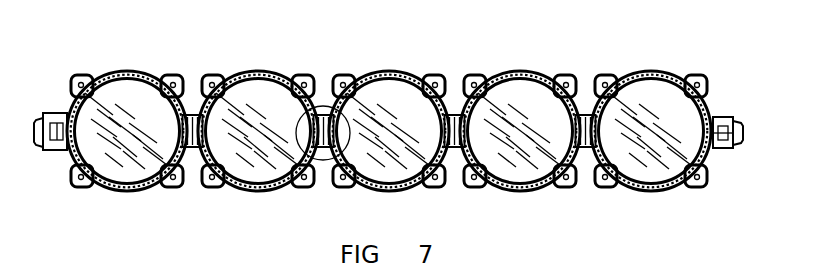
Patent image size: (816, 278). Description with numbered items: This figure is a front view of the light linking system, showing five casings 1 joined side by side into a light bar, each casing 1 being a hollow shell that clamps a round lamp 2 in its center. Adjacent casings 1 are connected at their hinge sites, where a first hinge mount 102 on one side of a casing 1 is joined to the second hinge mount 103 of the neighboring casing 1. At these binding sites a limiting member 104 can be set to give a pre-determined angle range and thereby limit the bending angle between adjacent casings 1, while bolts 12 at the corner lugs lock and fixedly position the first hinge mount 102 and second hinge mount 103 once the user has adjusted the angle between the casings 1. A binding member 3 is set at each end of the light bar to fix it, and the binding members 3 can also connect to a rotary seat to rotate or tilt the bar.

The casing 1 is at (389, 97).
The lamp 2 is at (388, 87).
The binding member 3 is at (388, 90).
The bolt 12 is at (389, 128).
The first hinge mount 102 is at (716, 118).
The second hinge mount 103 is at (53, 150).
The limiting member 104 is at (198, 130).